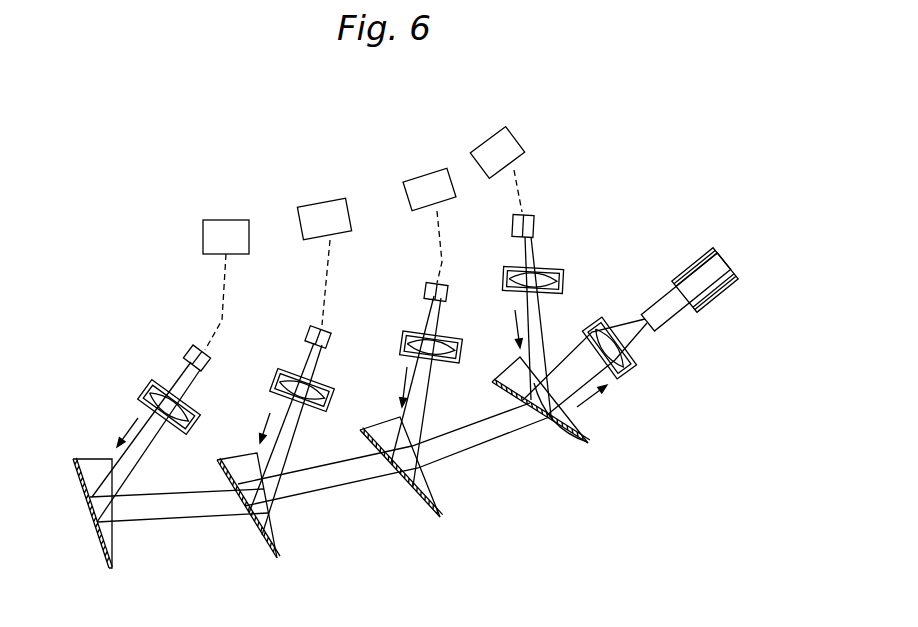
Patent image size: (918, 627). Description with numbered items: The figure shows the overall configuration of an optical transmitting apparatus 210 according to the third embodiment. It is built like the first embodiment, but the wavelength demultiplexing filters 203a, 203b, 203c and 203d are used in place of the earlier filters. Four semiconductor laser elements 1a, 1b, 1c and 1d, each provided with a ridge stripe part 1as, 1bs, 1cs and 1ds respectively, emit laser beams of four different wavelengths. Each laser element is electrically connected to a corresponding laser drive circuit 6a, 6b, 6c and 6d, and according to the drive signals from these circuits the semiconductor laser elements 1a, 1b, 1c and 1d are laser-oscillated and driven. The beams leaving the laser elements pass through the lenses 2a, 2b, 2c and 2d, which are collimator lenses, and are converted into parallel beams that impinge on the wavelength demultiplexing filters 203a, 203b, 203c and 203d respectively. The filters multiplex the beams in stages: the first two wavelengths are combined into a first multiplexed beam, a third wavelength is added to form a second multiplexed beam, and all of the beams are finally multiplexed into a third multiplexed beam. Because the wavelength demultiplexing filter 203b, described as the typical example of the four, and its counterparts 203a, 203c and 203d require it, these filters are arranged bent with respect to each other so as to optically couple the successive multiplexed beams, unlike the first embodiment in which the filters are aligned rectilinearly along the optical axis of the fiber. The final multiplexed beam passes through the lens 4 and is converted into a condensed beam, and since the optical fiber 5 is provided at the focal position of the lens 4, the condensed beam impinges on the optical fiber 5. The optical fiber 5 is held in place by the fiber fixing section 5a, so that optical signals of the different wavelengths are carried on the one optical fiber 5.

The optical transmitting apparatus 210 is at (110, 192).
The laser drive circuit 6a is at (228, 218).
The laser drive circuit 6b is at (327, 200).
The laser drive circuit 6c is at (426, 171).
The laser drive circuit 6d is at (488, 134).
The semiconductor laser element 1a is at (190, 352).
The ridge stripe part 1as is at (207, 347).
The semiconductor laser element 1b is at (310, 330).
The ridge stripe part 1bs is at (325, 327).
The semiconductor laser element 1c is at (427, 283).
The ridge stripe part 1cs is at (438, 280).
The semiconductor laser element 1d is at (535, 228).
The ridge stripe part 1ds is at (526, 213).
The lens 2a is at (155, 382).
The lens 2b is at (282, 372).
The lens 2c is at (405, 335).
The lens 2d is at (502, 273).
The wavelength demultiplexing filter 203a is at (100, 540).
The wavelength demultiplexing filter 203b is at (262, 540).
The wavelength demultiplexing filter 203c is at (410, 497).
The wavelength demultiplexing filter 203d is at (557, 427).
The lens 4 is at (597, 317).
The optical fiber 5 is at (667, 317).
The fiber fixing section 5a is at (693, 253).